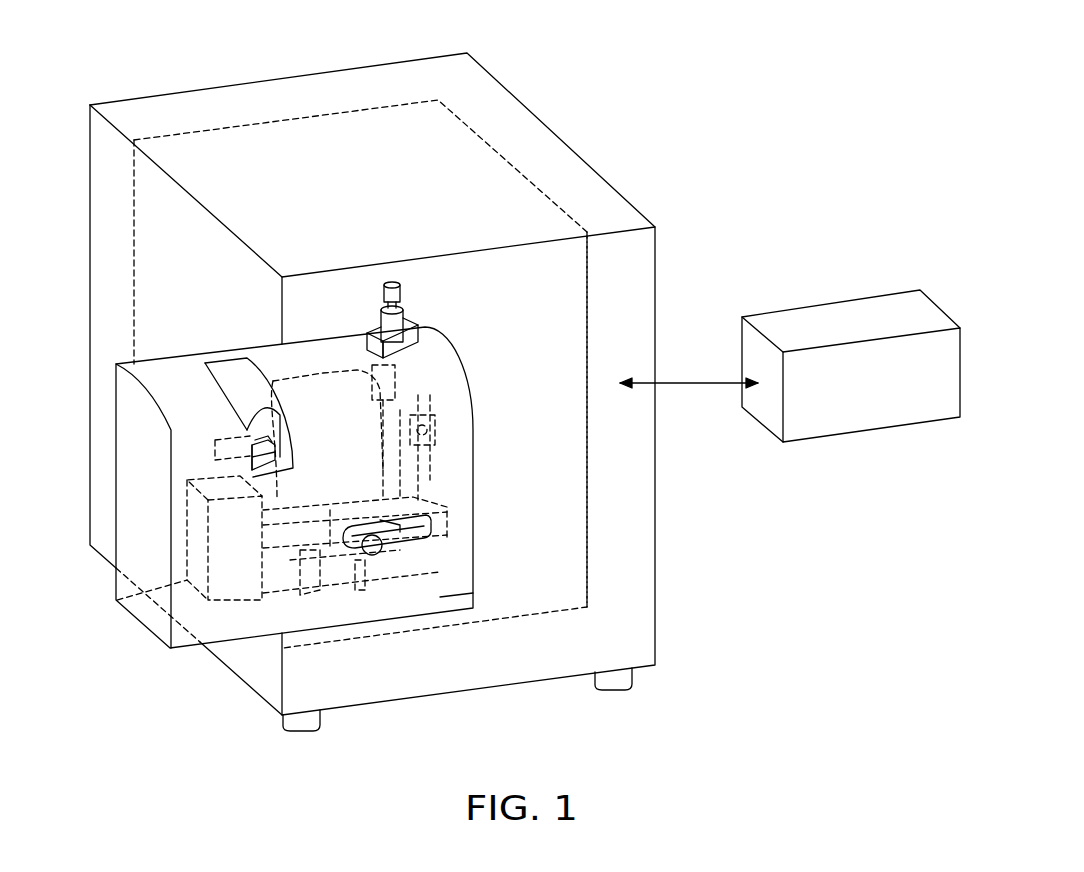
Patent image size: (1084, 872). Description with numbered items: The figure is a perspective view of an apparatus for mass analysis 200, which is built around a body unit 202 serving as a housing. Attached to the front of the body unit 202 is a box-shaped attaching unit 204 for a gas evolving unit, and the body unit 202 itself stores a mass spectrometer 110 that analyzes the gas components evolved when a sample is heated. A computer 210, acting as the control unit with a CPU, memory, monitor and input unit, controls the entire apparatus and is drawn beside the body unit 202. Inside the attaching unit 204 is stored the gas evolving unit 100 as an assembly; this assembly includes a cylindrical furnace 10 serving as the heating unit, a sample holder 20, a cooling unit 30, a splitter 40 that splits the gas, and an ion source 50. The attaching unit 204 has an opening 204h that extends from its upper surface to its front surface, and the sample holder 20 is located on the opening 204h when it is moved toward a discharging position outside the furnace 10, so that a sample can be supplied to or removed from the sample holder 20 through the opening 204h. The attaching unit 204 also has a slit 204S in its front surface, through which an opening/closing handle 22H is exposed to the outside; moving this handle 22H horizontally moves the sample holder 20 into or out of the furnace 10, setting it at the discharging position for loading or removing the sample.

The apparatus for mass analysis 200 is at (858, 63).
The body unit 202 is at (557, 157).
The attaching unit for the gas evolving unit 204 is at (424, 461).
The opening 204h is at (233, 378).
The slit 204S is at (473, 580).
The computer 210 is at (872, 430).
The gas evolving unit 100 is at (467, 357).
The mass spectrometer 110 is at (597, 298).
The furnace 10 is at (325, 370).
The sample holder 20 is at (250, 426).
The opening/closing handle 22H is at (372, 548).
The cooling unit 30 is at (198, 572).
The splitter 40 is at (412, 365).
The ion source 50 is at (395, 398).